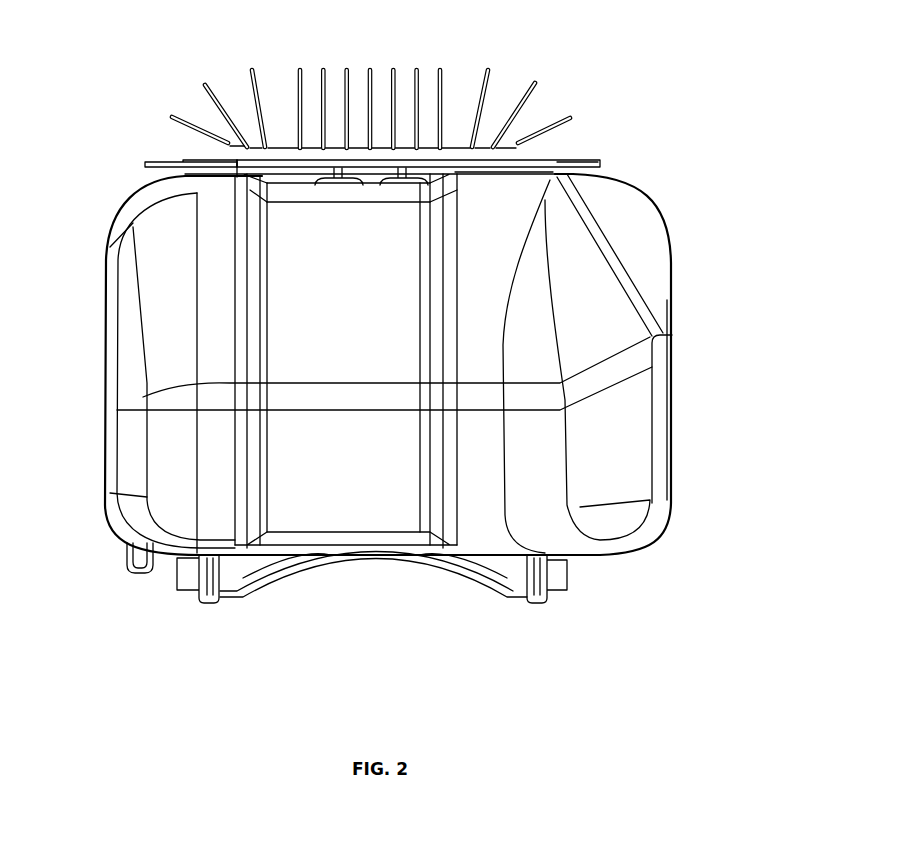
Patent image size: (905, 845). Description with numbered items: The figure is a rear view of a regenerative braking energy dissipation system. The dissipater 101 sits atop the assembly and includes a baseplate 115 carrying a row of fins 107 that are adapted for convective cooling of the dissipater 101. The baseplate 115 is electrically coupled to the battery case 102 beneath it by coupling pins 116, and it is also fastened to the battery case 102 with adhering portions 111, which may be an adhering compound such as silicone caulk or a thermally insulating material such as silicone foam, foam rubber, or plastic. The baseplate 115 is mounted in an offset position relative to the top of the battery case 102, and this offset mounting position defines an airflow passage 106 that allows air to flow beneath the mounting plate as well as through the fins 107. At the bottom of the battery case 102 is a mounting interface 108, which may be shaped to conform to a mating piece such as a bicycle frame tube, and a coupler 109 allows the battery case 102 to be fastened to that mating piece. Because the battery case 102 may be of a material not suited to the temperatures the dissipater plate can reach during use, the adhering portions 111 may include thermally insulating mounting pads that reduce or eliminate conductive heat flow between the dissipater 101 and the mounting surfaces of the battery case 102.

The dissipater 101 is at (470, 147).
The battery case 102 is at (672, 290).
The airflow passage 106 is at (143, 170).
The fins 107 is at (299, 66).
The mounting interface 108 is at (453, 567).
The coupler 109 is at (208, 602).
The adhering portions 111 is at (598, 168).
The baseplate 115 is at (485, 165).
The coupling pins 116 is at (378, 168).